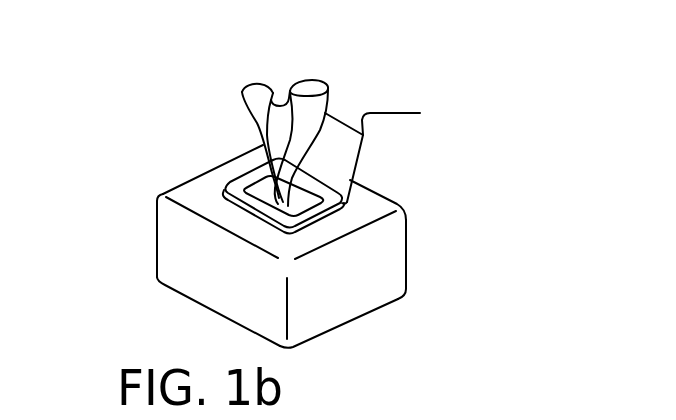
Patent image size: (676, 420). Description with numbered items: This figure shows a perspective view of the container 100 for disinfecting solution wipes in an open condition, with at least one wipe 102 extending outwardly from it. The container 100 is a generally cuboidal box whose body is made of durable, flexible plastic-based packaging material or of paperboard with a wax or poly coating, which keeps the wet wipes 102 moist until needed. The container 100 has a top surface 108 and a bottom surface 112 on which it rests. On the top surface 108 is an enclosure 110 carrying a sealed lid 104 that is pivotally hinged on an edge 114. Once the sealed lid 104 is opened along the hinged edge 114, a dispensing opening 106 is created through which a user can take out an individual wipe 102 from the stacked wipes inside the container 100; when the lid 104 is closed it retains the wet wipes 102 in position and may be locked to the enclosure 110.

The container 100 is at (217, 131).
The wipe 102 is at (290, 188).
The sealed lid 104 is at (420, 113).
The dispensing opening 106 is at (287, 195).
The top surface 108 is at (330, 234).
The enclosure 110 is at (265, 203).
The bottom surface 112 is at (230, 320).
The hinged edge 114 is at (338, 204).